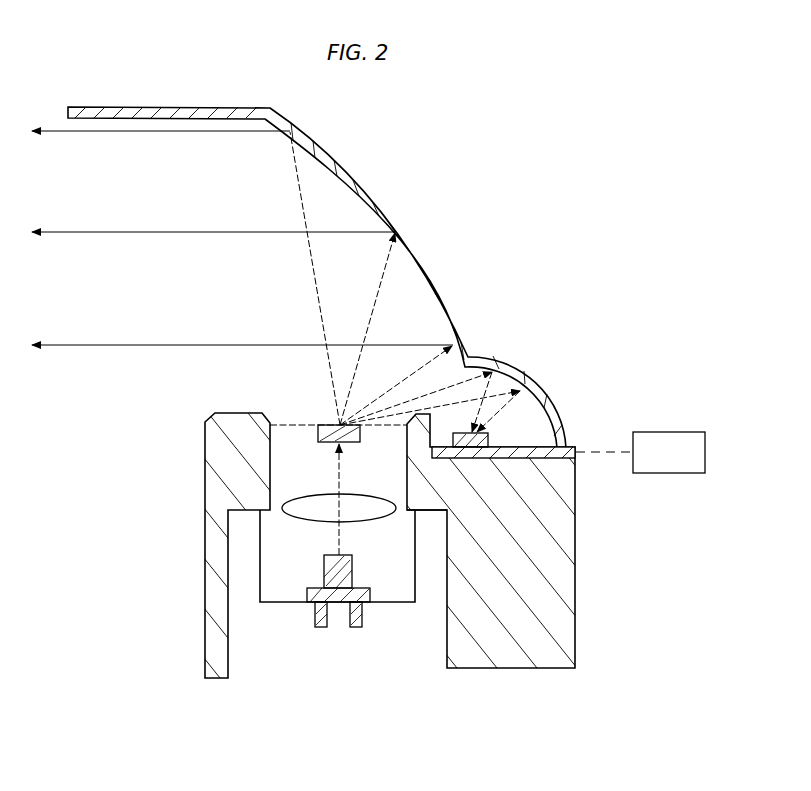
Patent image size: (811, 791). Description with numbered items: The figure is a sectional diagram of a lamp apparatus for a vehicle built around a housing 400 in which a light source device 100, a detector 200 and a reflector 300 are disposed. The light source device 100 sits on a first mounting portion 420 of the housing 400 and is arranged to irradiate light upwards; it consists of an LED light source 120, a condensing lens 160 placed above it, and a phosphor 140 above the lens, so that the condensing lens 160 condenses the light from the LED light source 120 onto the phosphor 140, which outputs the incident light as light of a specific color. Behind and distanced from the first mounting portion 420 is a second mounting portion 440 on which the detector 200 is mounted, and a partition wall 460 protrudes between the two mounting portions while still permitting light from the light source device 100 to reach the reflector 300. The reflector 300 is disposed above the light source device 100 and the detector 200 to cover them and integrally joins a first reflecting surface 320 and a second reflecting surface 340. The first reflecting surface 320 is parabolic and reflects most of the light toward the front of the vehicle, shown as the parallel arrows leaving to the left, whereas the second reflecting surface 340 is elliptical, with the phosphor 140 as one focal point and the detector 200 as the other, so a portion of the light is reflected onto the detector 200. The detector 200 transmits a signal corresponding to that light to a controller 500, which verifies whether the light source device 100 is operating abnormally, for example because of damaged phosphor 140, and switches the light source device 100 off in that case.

The light source device 100 is at (273, 580).
The LED light source 120 is at (338, 613).
The phosphor 140 is at (318, 442).
The condensing lens 160 is at (300, 508).
The detector 200 is at (489, 440).
The reflector 300 is at (420, 224).
The first reflecting surface 320 is at (352, 168).
The second reflecting surface 340 is at (512, 382).
The housing 400 is at (392, 592).
The first mounting portion 420 is at (247, 512).
The second mounting portion 440 is at (552, 617).
The partition wall 460 is at (458, 461).
The controller 500 is at (668, 432).